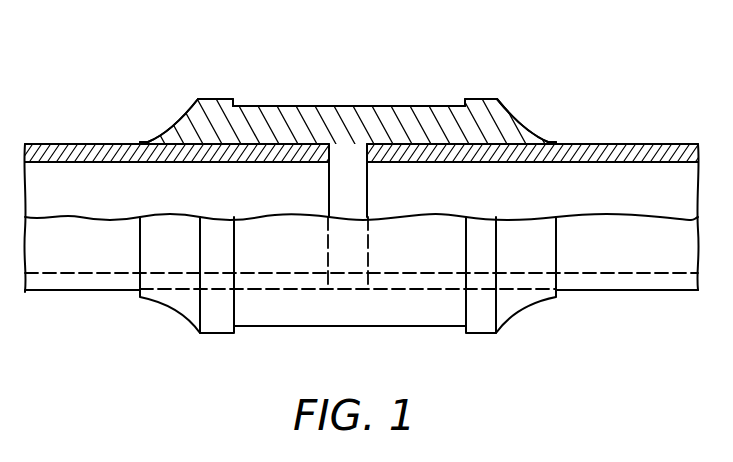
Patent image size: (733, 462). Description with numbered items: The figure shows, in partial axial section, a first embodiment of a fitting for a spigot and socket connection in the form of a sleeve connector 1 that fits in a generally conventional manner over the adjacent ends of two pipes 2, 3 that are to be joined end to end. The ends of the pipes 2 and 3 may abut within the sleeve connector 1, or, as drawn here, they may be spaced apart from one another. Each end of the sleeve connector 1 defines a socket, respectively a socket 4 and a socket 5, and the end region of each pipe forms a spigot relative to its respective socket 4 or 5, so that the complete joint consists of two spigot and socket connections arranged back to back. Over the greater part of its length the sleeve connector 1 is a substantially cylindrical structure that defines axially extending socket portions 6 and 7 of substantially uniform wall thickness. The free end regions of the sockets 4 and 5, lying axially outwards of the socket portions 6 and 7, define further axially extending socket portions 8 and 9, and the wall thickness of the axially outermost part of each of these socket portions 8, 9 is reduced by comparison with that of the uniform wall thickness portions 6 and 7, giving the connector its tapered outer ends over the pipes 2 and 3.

The sleeve connector 1 is at (350, 84).
The pipe 2 is at (62, 152).
The pipe 3 is at (621, 152).
The socket 4 is at (231, 128).
The socket 5 is at (486, 128).
The socket portion 6 is at (281, 127).
The socket portion 7 is at (405, 125).
The socket portion 8 is at (176, 130).
The socket portion 9 is at (520, 124).